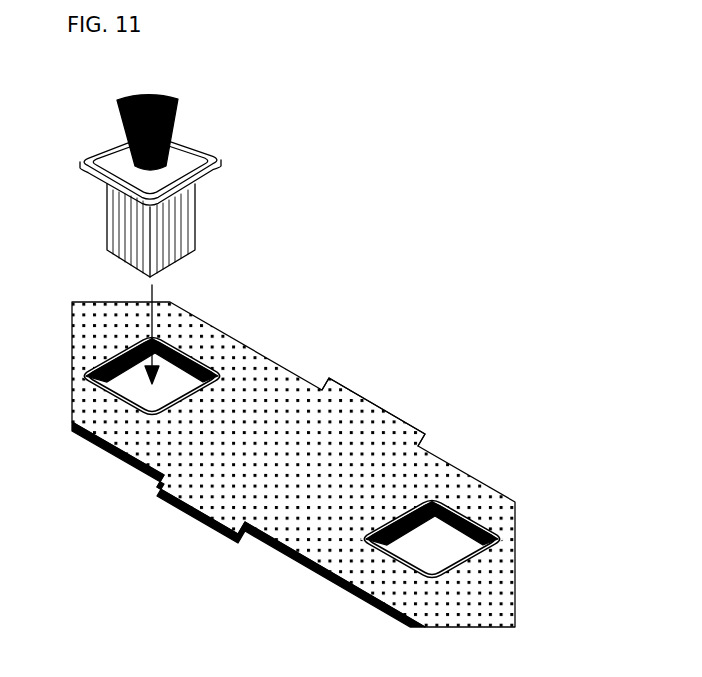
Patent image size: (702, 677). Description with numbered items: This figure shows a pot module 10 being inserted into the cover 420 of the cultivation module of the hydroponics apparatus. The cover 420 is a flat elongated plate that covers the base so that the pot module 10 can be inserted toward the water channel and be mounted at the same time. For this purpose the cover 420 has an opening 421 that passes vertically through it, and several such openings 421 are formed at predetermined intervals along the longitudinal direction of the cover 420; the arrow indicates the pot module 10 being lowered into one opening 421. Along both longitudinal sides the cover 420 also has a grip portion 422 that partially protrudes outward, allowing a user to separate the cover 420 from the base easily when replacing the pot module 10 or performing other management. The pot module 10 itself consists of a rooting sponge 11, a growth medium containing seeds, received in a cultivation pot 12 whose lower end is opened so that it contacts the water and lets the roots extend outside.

The pot module 10 is at (223, 167).
The rooting sponge 11 is at (180, 99).
The cultivation pot 12 is at (218, 159).
The cover 420 is at (284, 323).
The opening 421 is at (443, 540).
The grip portion 422 is at (377, 408).